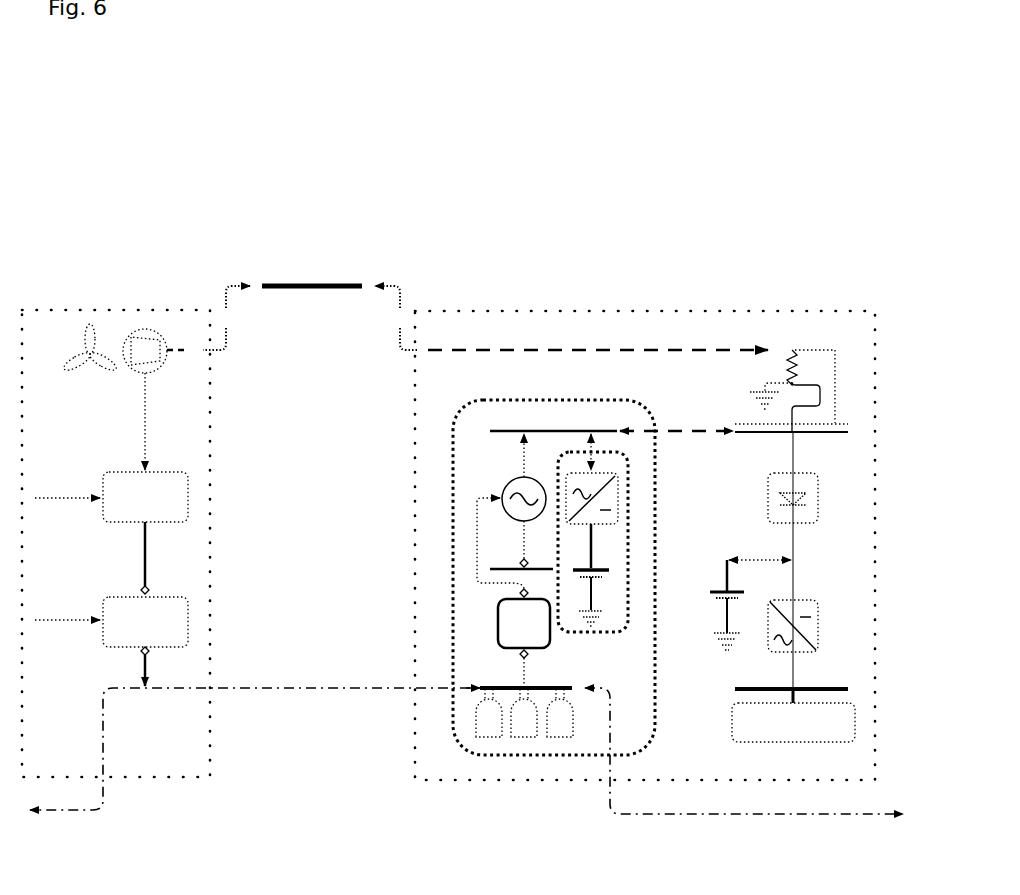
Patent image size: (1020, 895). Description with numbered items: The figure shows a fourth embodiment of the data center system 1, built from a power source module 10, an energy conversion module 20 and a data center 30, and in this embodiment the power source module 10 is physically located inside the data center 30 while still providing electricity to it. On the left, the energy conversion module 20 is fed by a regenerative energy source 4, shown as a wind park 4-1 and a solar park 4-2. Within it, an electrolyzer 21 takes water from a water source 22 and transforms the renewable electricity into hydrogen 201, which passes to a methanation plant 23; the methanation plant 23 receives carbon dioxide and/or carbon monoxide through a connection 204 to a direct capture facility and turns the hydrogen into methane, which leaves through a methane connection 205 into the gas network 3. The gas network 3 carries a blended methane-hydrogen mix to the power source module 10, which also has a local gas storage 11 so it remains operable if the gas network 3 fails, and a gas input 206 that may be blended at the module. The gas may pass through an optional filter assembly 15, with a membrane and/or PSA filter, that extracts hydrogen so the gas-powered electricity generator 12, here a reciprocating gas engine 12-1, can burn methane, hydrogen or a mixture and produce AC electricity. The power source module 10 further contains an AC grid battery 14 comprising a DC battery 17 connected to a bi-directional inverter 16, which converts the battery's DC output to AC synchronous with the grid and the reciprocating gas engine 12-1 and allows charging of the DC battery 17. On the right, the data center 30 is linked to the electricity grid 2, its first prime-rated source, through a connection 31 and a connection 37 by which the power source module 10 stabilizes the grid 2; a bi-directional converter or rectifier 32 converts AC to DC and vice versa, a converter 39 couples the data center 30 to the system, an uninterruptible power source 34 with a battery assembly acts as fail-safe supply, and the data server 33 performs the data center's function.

The data center system 1 is at (176, 184).
The electricity grid 2 is at (340, 285).
The gas network 3 is at (800, 817).
The regenerative energy source 4 is at (111, 349).
The wind park 4-1 is at (88, 326).
The solar park 4-2 is at (158, 326).
The power source module 10 is at (553, 398).
The local gas storage 11 is at (528, 730).
The gas-powered electricity generator 12 is at (425, 515).
The reciprocating gas engine 12-1 is at (502, 487).
The AC grid battery 14 is at (630, 613).
The filter assembly 15 is at (524, 642).
The bi-directional inverter 16 is at (619, 495).
The DC battery 17 is at (600, 568).
The energy conversion module 20 is at (214, 410).
The electrolyzer 21 is at (145, 497).
The water source 22 is at (88, 494).
The methanation plant 23 is at (145, 622).
The data center 30 is at (667, 311).
The connection to the electricity grid 31 is at (790, 350).
The bi-directional converter or rectifier 32 is at (820, 497).
The data server 33 is at (835, 703).
The uninterruptible power source 34 is at (722, 590).
The connection 37 is at (802, 433).
The converter 39 is at (820, 622).
The hydrogen 201 is at (146, 571).
The connection to direct capture facility 204 is at (92, 618).
The methane connection 205 is at (147, 672).
The gas input 206 is at (527, 668).